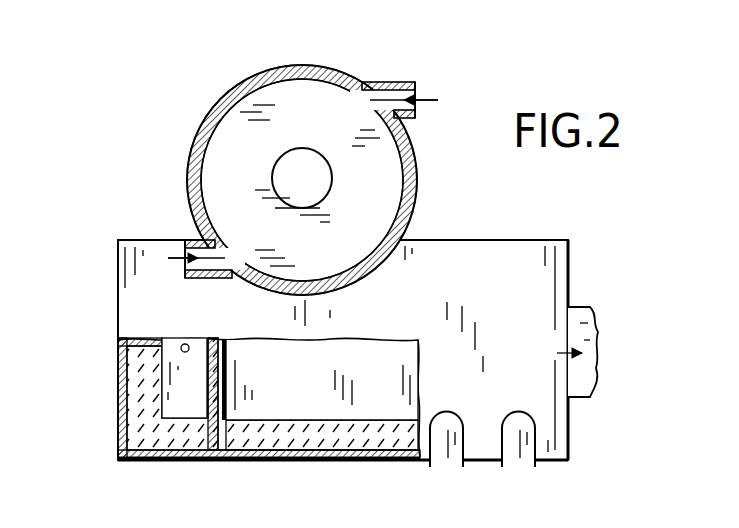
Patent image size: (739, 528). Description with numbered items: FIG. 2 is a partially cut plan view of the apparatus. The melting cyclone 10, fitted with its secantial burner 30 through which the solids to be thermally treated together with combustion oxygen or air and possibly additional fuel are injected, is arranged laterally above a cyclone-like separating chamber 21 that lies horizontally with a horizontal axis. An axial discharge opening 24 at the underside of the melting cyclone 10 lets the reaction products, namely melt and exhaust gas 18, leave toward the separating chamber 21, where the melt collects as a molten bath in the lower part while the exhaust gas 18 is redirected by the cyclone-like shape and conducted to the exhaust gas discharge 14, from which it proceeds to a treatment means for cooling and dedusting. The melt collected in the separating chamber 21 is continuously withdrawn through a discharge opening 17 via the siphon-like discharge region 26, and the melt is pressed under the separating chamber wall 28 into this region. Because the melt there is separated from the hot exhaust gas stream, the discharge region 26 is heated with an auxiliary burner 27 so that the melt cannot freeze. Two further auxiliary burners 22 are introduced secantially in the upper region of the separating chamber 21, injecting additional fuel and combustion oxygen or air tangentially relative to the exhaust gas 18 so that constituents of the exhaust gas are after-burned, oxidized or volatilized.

The melting cyclone 10 is at (316, 124).
The secantial burner 30 is at (425, 98).
The axial discharge opening 24 is at (332, 180).
The separating chamber 21 is at (487, 287).
The exhaust gas discharge 14 is at (578, 322).
The exhaust gas 18 is at (585, 363).
The discharge opening 17 is at (118, 350).
The discharge region 26 is at (170, 402).
The auxiliary burner 27 is at (184, 344).
The separating chamber wall 28 is at (230, 374).
The auxiliary burners 22 is at (450, 412).